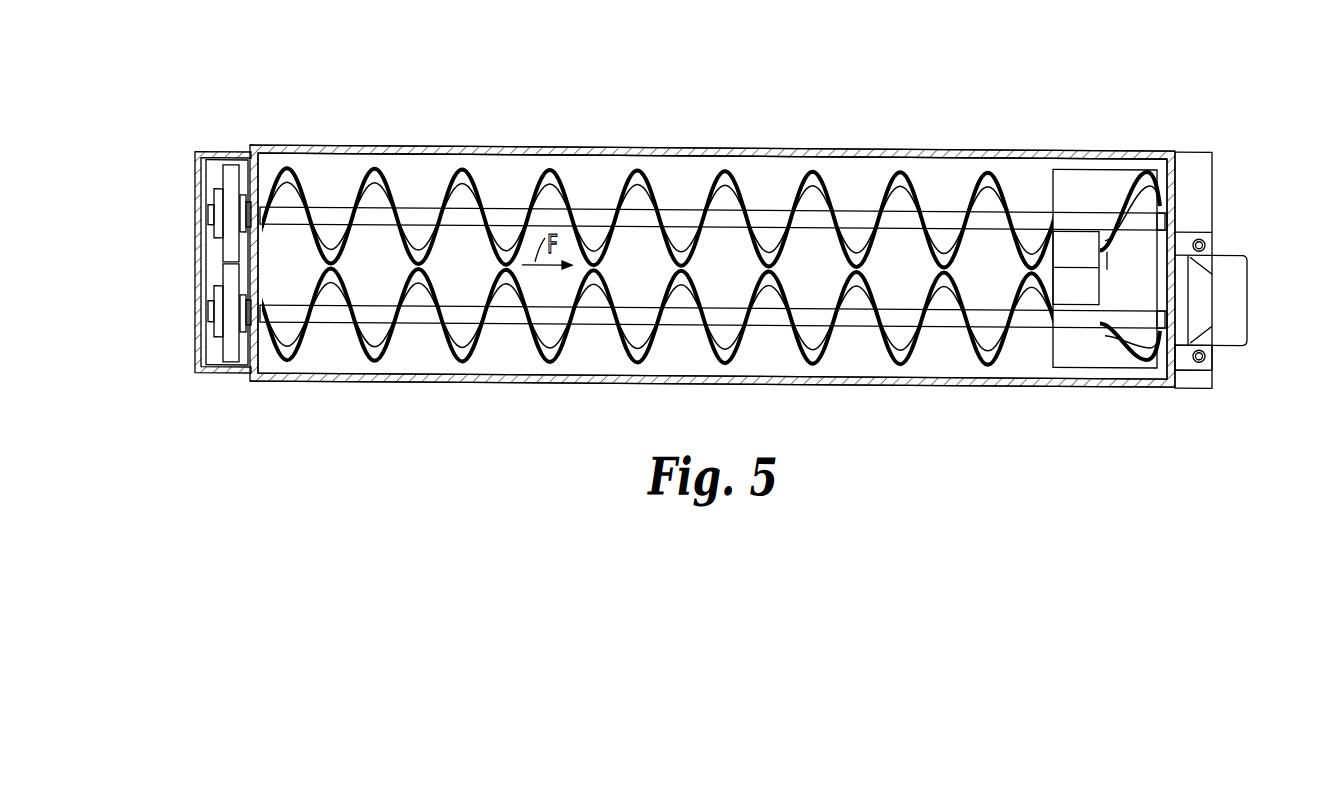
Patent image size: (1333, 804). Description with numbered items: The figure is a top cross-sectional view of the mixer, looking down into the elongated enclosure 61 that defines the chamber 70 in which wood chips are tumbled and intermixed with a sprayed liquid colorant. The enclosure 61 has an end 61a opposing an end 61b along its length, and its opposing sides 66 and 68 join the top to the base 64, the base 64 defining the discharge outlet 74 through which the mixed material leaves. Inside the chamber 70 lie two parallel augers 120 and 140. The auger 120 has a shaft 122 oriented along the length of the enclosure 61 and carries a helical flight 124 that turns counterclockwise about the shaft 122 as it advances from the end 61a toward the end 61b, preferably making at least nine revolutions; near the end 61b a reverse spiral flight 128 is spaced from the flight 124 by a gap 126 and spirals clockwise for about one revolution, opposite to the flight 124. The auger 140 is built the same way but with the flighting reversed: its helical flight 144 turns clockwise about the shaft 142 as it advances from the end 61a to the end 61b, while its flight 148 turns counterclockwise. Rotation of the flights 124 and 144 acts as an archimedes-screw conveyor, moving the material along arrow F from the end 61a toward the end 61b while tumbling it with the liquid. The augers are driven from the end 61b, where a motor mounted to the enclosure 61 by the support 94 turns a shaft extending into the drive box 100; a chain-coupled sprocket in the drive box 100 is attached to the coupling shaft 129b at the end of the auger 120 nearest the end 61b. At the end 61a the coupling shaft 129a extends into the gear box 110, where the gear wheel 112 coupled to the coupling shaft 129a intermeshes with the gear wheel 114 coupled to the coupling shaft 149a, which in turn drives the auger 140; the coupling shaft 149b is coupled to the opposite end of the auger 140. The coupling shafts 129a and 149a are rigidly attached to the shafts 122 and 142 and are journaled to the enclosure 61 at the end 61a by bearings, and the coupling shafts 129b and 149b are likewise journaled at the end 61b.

The enclosure 61 is at (578, 138).
The end of enclosure 61a is at (192, 355).
The end of enclosure 61b is at (1180, 180).
The base 64 is at (828, 275).
The side 66 is at (457, 381).
The side 68 is at (655, 148).
The chamber 70 is at (433, 152).
The discharge outlet 74 is at (1067, 368).
The support 94 is at (1212, 232).
The drive box 100 is at (1248, 296).
The gear box 110 is at (185, 148).
The gear wheel 112 is at (237, 364).
The gear wheel 114 is at (235, 158).
The auger 120 is at (350, 360).
The shaft 122 is at (425, 323).
The helical flight 124 is at (830, 362).
The gap 126 is at (1097, 260).
The reverse spiral flight 128 is at (1118, 322).
The coupling shaft 129a is at (244, 296).
The coupling shaft 129b is at (1178, 355).
The auger 140 is at (355, 171).
The shaft 142 is at (520, 206).
The helical flight 144 is at (832, 167).
The flight 148 is at (1135, 170).
The coupling shaft 149a is at (249, 230).
The coupling shaft 149b is at (1133, 185).